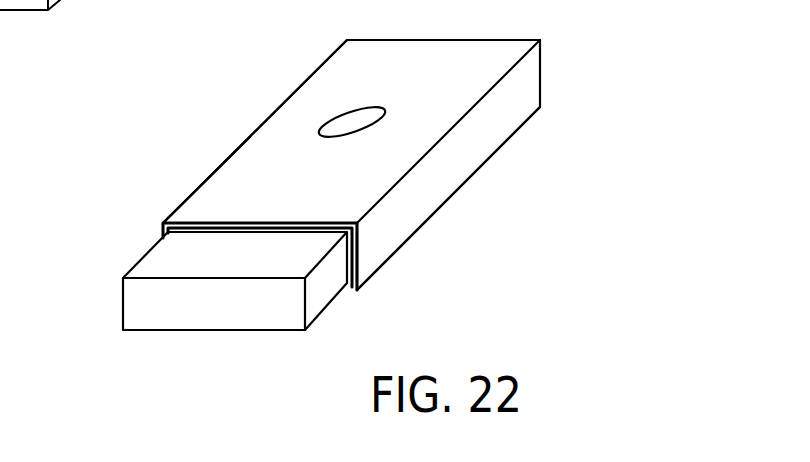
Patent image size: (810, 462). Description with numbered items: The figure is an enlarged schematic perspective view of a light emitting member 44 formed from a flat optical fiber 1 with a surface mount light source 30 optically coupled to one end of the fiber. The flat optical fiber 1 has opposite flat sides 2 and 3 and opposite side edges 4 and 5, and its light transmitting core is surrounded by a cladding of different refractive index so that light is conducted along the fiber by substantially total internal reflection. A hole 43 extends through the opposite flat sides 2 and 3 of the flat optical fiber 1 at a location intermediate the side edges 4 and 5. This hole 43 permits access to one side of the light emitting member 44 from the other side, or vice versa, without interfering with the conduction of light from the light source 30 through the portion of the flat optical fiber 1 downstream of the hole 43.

The flat optical fiber 1 is at (316, 146).
The flat side 2 is at (322, 82).
The flat side 3 is at (428, 217).
The side edge 4 is at (197, 188).
The side edge 5 is at (493, 130).
The light source 30 is at (160, 265).
The hole 43 is at (370, 110).
The light emitting member 44 is at (228, 151).